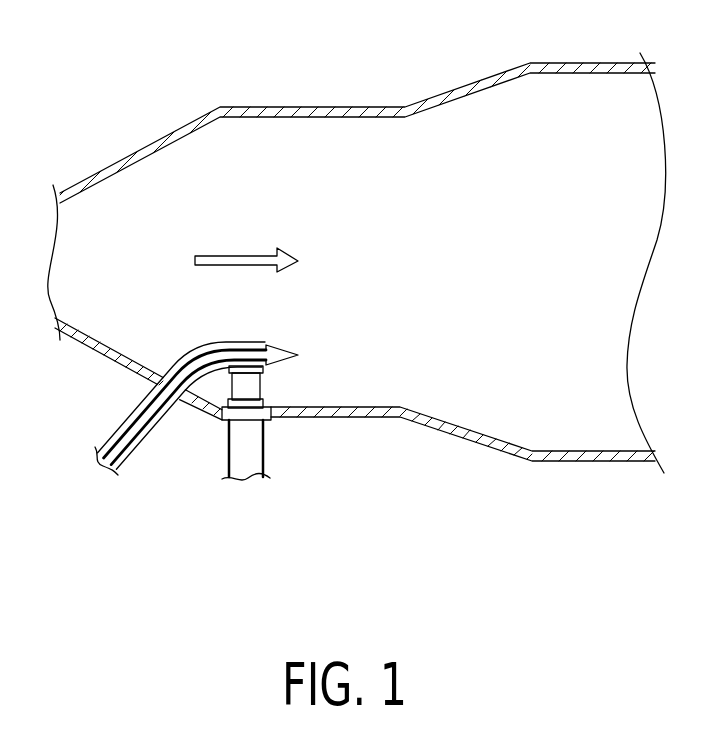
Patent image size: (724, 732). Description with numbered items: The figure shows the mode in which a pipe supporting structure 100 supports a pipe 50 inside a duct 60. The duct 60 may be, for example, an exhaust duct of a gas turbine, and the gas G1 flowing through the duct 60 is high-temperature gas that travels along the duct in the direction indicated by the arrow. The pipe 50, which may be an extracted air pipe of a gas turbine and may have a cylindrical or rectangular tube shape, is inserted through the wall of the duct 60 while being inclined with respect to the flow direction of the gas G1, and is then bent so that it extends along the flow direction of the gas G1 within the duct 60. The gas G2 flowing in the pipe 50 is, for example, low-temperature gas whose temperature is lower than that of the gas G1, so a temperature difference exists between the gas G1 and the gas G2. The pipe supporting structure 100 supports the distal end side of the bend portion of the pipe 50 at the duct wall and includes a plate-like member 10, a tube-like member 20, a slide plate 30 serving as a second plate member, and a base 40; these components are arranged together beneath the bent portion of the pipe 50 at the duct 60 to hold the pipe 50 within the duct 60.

The pipe supporting structure 100 is at (233, 473).
The plate-like member 10 is at (250, 461).
The tube-like member 20 is at (242, 390).
The slide plate 30 is at (258, 421).
The base 40 is at (278, 413).
The pipe 50 is at (143, 440).
The duct 60 is at (443, 95).
The gas flowing in the duct G1 is at (243, 258).
The gas flowing in the pipe G2 is at (175, 360).